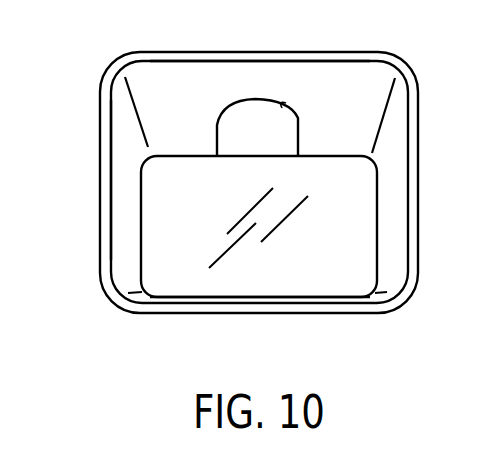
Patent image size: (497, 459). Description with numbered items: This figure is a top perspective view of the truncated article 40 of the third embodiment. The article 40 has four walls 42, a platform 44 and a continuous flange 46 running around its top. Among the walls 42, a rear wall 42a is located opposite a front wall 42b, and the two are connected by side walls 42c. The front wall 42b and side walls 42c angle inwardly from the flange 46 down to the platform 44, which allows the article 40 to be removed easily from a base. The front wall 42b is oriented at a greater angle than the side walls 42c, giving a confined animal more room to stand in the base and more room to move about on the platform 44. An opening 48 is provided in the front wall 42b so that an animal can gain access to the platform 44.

The article 40 is at (105, 309).
The walls 42 is at (392, 221).
The rear wall 42a is at (222, 292).
The front wall 42b is at (206, 73).
The side walls 42c is at (120, 222).
The platform 44 is at (313, 285).
The continuous flange 46 is at (292, 55).
The opening 48 is at (282, 108).